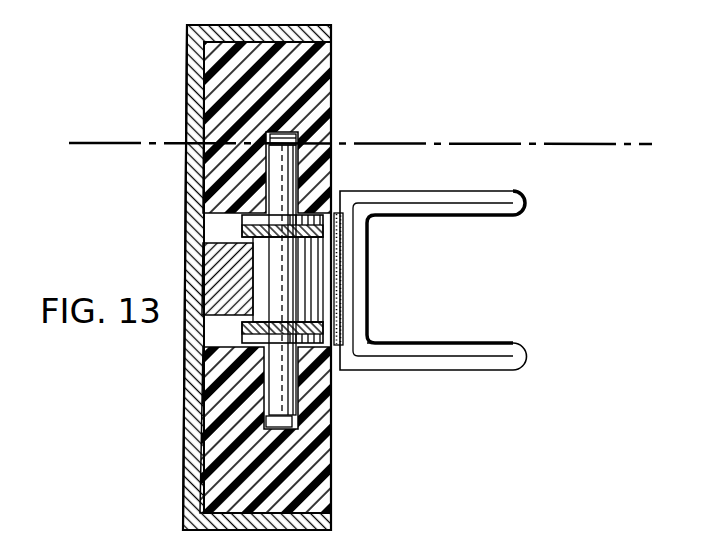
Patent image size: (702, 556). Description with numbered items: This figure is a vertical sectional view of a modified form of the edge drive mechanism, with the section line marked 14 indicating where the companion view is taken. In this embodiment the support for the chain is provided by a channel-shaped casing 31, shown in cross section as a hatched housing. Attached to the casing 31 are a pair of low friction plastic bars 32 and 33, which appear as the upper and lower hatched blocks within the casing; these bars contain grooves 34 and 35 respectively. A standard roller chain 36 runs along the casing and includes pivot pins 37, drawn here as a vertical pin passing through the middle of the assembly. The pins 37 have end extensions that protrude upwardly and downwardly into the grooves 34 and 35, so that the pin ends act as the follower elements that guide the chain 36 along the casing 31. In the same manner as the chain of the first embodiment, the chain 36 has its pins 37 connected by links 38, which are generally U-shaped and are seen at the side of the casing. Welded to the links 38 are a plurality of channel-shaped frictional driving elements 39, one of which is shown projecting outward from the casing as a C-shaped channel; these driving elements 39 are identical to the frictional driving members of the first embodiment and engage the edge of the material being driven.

The section line 14- 14 is at (108, 187).
The channel-shaped casing 31 is at (187, 78).
The low friction plastic bar 32 is at (316, 76).
The low friction plastic bar 33 is at (318, 489).
The groove 34 is at (300, 136).
The groove 35 is at (284, 426).
The standard roller chain 36 is at (240, 230).
The pivot pin 37 is at (285, 172).
The link 38 is at (334, 280).
The channel-shaped frictional driving element 39 is at (522, 362).